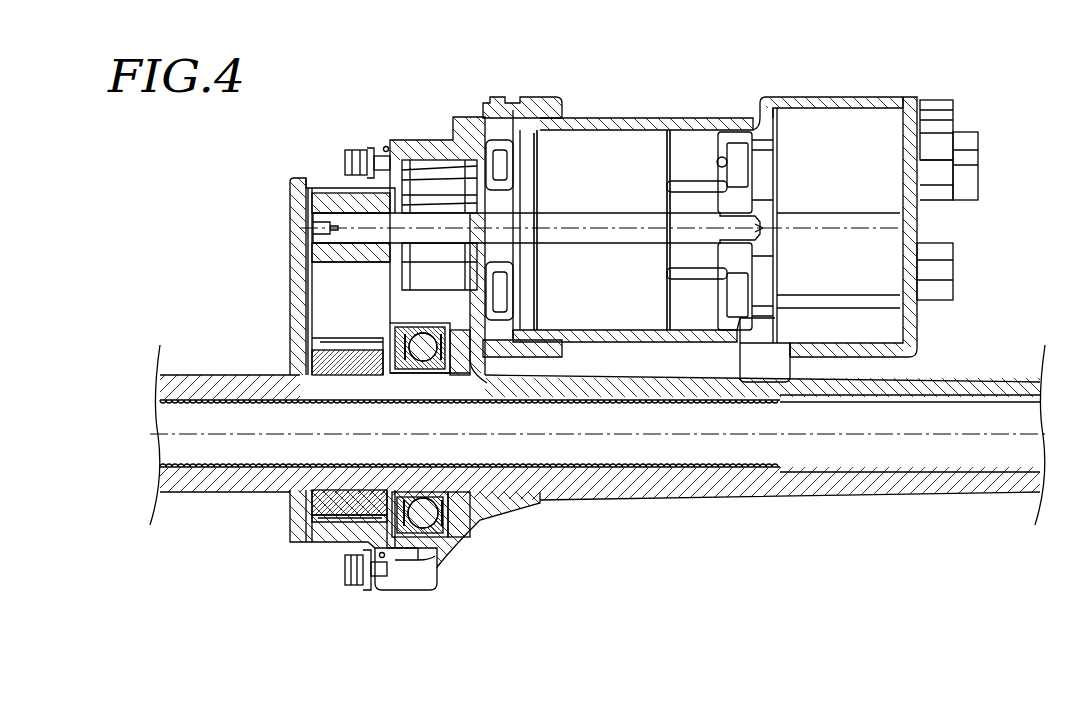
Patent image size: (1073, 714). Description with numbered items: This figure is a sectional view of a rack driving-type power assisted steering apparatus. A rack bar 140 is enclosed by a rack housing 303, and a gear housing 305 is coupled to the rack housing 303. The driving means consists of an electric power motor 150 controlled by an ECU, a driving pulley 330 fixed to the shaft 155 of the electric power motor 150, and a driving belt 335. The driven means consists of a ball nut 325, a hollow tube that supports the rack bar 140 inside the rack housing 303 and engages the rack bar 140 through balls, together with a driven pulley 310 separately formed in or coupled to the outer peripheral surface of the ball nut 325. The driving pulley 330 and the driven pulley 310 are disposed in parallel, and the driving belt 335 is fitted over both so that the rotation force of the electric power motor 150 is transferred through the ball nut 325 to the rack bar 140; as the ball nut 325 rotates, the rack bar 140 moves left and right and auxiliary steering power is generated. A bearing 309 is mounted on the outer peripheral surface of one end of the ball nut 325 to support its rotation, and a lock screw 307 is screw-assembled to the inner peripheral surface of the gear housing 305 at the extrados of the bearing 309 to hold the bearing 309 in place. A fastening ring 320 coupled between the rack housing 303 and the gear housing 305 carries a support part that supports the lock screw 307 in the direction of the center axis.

The rack bar 140 is at (860, 447).
The electric power motor 150 is at (686, 94).
The shaft 155 is at (577, 220).
The rack housing 303 is at (297, 219).
The gear housing 305 is at (485, 493).
The lock screw 307 is at (400, 547).
The bearing 309 is at (432, 538).
The driven pulley 310 is at (315, 497).
The fastening ring 320 is at (386, 146).
The ball nut 325 is at (372, 350).
The driving pulley 330 is at (333, 200).
The driving belt 335 is at (312, 327).